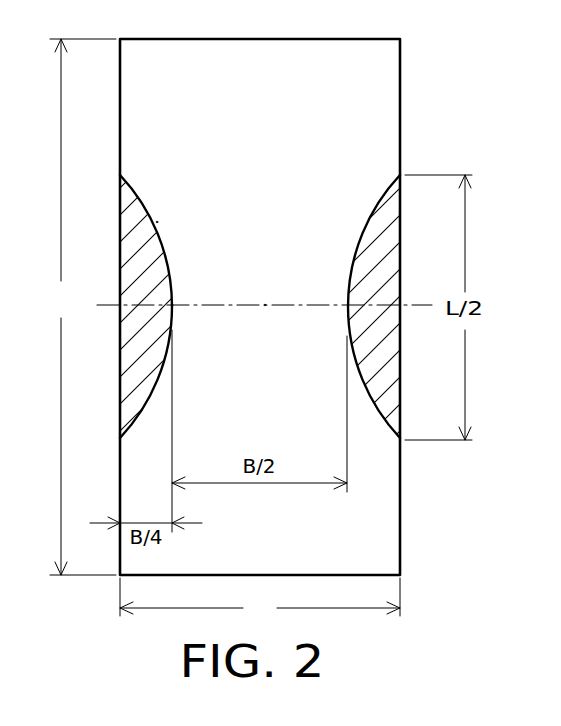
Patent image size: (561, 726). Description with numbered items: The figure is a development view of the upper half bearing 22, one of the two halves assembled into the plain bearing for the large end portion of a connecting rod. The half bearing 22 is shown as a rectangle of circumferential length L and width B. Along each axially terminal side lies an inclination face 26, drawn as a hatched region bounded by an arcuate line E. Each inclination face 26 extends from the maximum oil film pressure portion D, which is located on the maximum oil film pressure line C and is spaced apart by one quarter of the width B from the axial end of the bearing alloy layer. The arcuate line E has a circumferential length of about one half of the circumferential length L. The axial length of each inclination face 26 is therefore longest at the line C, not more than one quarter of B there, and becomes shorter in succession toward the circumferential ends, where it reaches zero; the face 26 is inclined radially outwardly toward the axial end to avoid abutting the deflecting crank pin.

The half bearing 22 is at (402, 72).
The inclination face 26 is at (130, 252).
The maximum oil film pressure line C is at (265, 306).
The maximum oil film pressure portion D is at (171, 306).
The arcuate line E is at (158, 222).
The circumferential length L is at (83, 307).
The width B is at (260, 599).